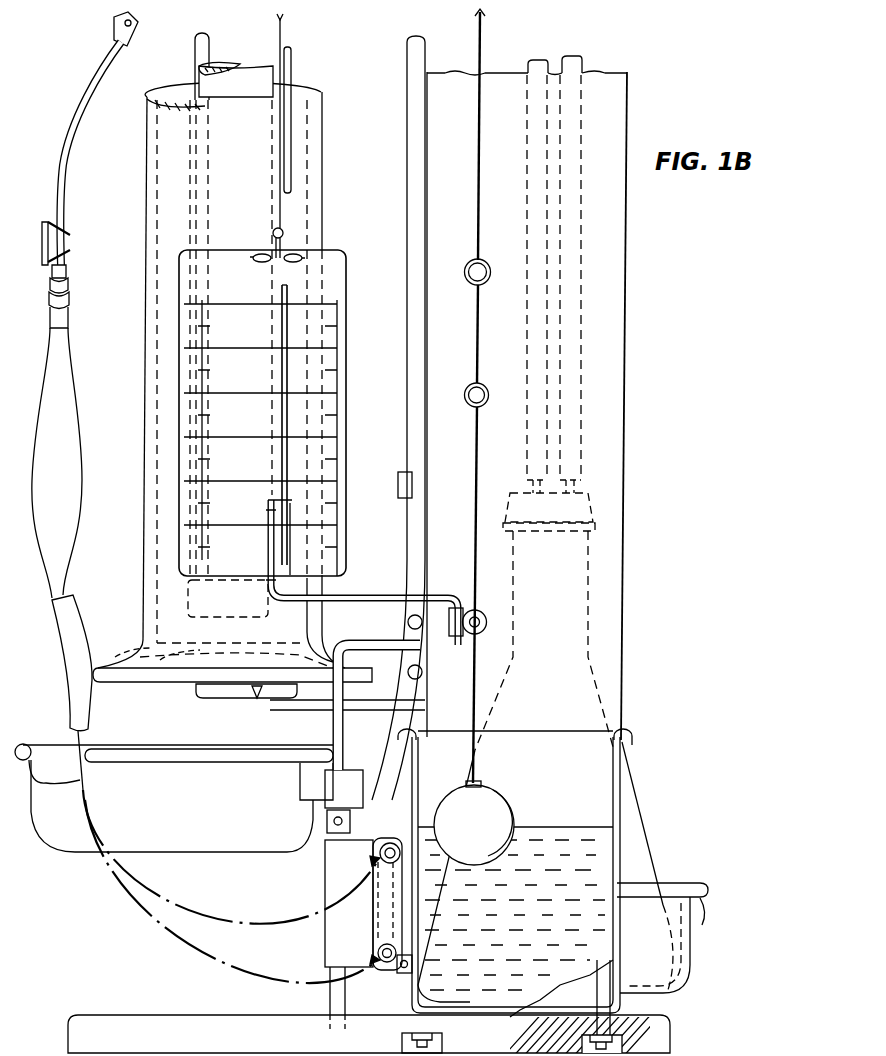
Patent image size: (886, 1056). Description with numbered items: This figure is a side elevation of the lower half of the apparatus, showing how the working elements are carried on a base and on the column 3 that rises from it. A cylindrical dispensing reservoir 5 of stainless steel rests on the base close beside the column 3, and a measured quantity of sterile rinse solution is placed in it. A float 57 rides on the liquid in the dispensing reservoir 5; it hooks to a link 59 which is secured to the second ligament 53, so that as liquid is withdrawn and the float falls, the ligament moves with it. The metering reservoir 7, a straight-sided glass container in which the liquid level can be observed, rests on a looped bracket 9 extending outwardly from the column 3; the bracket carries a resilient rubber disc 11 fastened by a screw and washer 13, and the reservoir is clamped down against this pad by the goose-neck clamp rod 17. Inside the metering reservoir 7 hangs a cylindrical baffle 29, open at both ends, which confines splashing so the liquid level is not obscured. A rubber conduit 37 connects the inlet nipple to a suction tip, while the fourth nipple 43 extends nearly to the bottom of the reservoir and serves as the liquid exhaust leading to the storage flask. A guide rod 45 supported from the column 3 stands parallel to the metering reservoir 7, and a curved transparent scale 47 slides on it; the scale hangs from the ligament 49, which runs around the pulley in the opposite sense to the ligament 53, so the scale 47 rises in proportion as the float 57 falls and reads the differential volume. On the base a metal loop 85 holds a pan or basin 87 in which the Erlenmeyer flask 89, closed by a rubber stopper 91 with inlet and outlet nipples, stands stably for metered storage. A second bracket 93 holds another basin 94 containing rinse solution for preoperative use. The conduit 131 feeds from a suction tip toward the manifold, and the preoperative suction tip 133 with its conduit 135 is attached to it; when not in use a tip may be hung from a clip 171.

The column 3 is at (625, 350).
The dispensing reservoir 5 is at (600, 772).
The metering reservoir 7 is at (146, 240).
The looped bracket 9 is at (287, 710).
The disc 11 is at (165, 685).
The screw and washer 13 is at (238, 700).
The goose-neck clamp rod 17 is at (172, 1015).
The cylindrical baffle 29 is at (256, 68).
The rubber conduit 37 is at (406, 406).
The fourth nipple 43 is at (200, 44).
The guide rod 45 is at (291, 142).
The transparent scale 47 is at (347, 292).
The ligament 49 is at (283, 32).
The second ligament 53 is at (482, 182).
The float 57 is at (502, 800).
The link 59 is at (482, 345).
The metal loop 85 is at (704, 918).
The pan or basin 87 is at (684, 882).
The Erlenmeyer flask 89 is at (640, 825).
The rubber stopper 91 is at (585, 510).
The second bracket 93 is at (125, 762).
The basin 94 is at (236, 853).
The conduit 131 is at (368, 738).
The preoperative suction tip 133 is at (66, 132).
The conduit 135 is at (70, 680).
The clip 171 is at (42, 255).